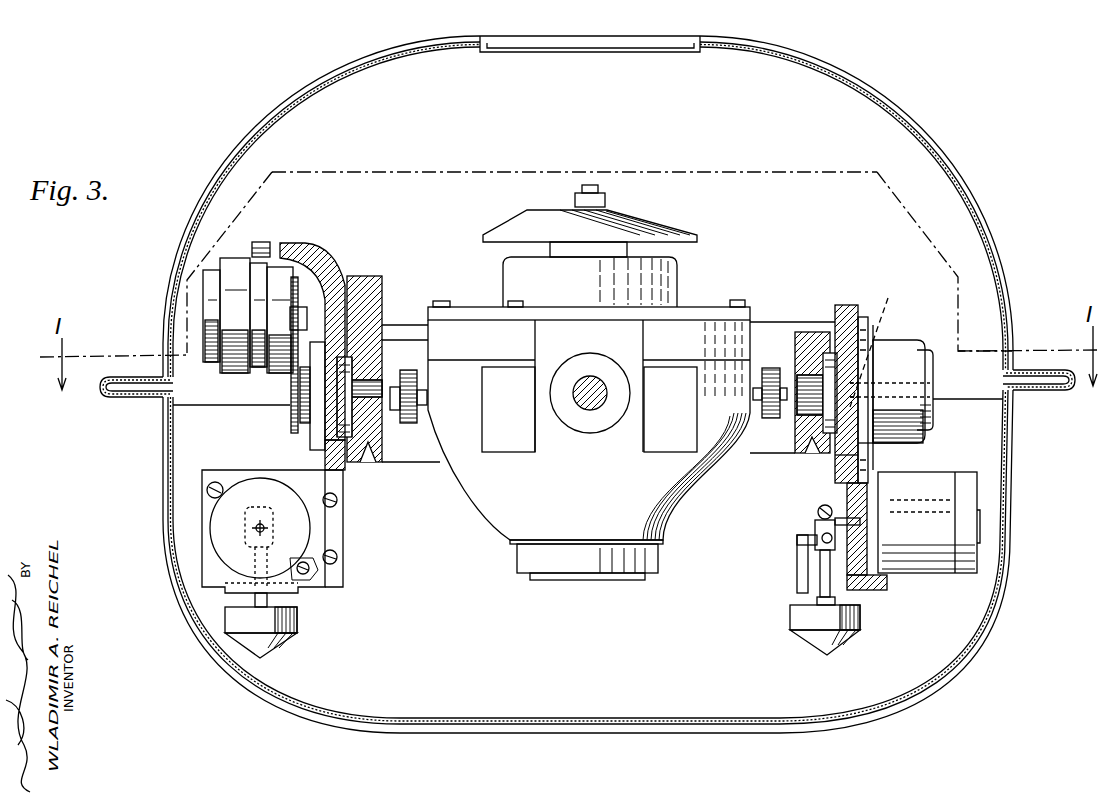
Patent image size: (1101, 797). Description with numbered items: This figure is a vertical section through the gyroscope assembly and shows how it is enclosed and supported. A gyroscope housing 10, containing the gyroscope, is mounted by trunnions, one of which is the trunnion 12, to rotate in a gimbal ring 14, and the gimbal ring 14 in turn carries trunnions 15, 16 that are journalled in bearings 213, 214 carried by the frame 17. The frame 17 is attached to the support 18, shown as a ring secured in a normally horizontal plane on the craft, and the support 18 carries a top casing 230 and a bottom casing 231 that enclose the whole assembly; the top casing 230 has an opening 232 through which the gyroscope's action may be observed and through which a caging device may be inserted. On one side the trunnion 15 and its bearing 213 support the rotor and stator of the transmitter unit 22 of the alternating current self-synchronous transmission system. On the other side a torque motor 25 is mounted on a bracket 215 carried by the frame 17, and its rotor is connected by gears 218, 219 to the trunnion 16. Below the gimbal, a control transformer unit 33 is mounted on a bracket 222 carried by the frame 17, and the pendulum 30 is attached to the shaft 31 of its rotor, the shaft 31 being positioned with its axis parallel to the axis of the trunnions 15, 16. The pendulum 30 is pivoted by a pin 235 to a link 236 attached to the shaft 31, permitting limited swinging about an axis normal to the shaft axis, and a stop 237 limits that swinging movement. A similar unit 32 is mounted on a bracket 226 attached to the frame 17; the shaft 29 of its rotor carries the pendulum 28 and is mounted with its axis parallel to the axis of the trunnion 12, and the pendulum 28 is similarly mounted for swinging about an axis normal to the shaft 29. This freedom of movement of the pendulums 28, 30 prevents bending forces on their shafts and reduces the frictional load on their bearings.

The gyroscope housing 10 is at (608, 382).
The trunnion 12 is at (583, 408).
The gimbal ring 14 is at (383, 293).
The trunnion 15 is at (882, 342).
The trunnion 16 is at (357, 403).
The frame 17 is at (320, 463).
The support 18 is at (1043, 387).
The transmitting unit 22 is at (897, 347).
The torque motor 25 is at (233, 262).
The pendulum 28 is at (297, 623).
The shaft 29 is at (266, 529).
The unit 32 is at (212, 533).
The pendulum 30 is at (860, 625).
The shaft 31 is at (855, 520).
The unit 33 is at (925, 483).
The bearing 213 is at (872, 450).
The bearing 214 is at (318, 427).
The bracket 215 is at (323, 253).
The gear 218 is at (295, 277).
The gear 219 is at (292, 373).
The bracket 222 is at (835, 470).
The bracket 226 is at (343, 488).
The top casing 230 is at (970, 201).
The bottom casing 231 is at (983, 620).
The opening 232 is at (678, 50).
The pin 235 is at (822, 541).
The link 236 is at (815, 529).
The stop 237 is at (797, 583).